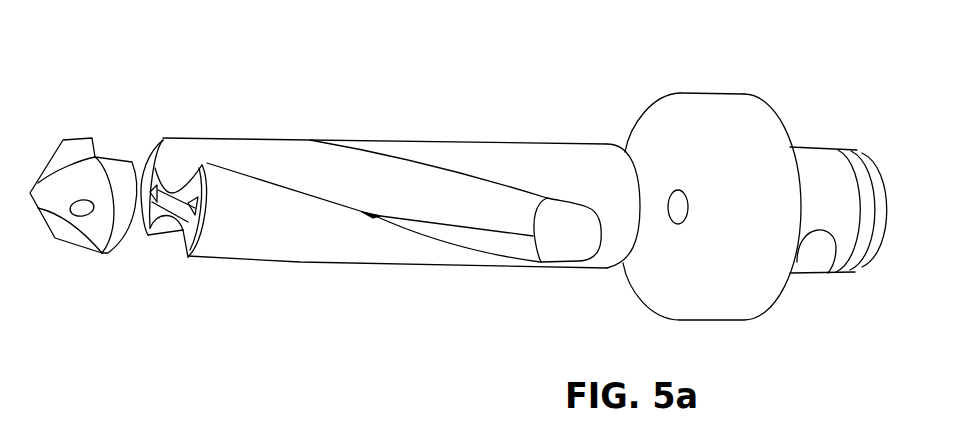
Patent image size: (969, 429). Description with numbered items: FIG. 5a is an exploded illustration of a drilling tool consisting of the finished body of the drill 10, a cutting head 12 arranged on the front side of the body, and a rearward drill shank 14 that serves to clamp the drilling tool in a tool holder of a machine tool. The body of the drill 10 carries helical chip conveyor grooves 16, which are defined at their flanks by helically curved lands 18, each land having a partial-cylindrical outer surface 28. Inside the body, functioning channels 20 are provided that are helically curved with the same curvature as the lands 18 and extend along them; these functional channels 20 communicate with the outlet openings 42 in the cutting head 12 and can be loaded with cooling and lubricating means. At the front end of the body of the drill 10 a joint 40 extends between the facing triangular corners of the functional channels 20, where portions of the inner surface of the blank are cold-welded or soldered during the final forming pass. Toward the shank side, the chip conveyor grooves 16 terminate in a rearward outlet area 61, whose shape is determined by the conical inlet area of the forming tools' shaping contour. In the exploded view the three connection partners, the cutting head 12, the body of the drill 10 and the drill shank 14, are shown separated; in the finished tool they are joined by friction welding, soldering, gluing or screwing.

The body of the drill 10 is at (547, 156).
The cutting head 12 is at (75, 158).
The drill shank 14 is at (812, 162).
The conveyor grooves 16 is at (378, 178).
The lands 18 is at (469, 161).
The partial-cylindrical outer surface 28 is at (313, 245).
The functioning channels 20 is at (153, 200).
The joint 40 is at (173, 197).
The outlet openings 42 is at (82, 210).
The rearward outlet area 61 is at (565, 237).